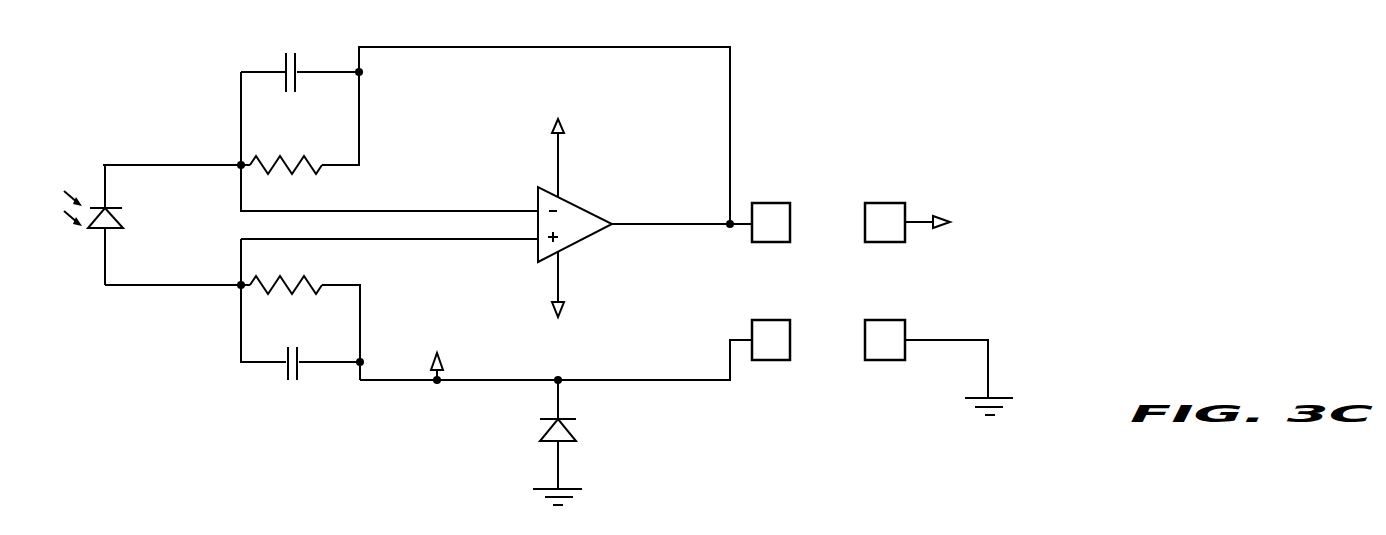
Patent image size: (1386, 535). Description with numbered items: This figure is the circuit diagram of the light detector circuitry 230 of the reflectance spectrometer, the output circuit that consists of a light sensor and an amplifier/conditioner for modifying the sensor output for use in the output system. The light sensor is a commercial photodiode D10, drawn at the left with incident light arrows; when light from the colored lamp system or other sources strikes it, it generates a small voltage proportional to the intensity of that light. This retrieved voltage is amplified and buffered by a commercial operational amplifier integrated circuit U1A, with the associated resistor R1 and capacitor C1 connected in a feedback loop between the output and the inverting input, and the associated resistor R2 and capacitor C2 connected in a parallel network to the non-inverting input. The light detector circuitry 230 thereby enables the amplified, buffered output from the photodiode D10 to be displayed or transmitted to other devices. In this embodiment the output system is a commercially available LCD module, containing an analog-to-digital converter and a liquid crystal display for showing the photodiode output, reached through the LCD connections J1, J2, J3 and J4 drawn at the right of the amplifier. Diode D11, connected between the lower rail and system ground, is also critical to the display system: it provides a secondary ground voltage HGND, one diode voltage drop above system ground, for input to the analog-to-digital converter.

The light detector circuitry 230 is at (903, 80).
The capacitor C1 is at (300, 72).
The resistor R1 is at (286, 166).
The resistor R2 is at (286, 283).
The capacitor C2 is at (300, 369).
The photodiode D10 is at (141, 224).
The operational amplifier integrated circuit U1A is at (599, 218).
The diode D11 is at (602, 431).
The LCD connection J1 is at (795, 224).
The LCD connection J2 is at (793, 342).
The LCD connection J3 is at (914, 224).
The LCD connection J4 is at (908, 342).